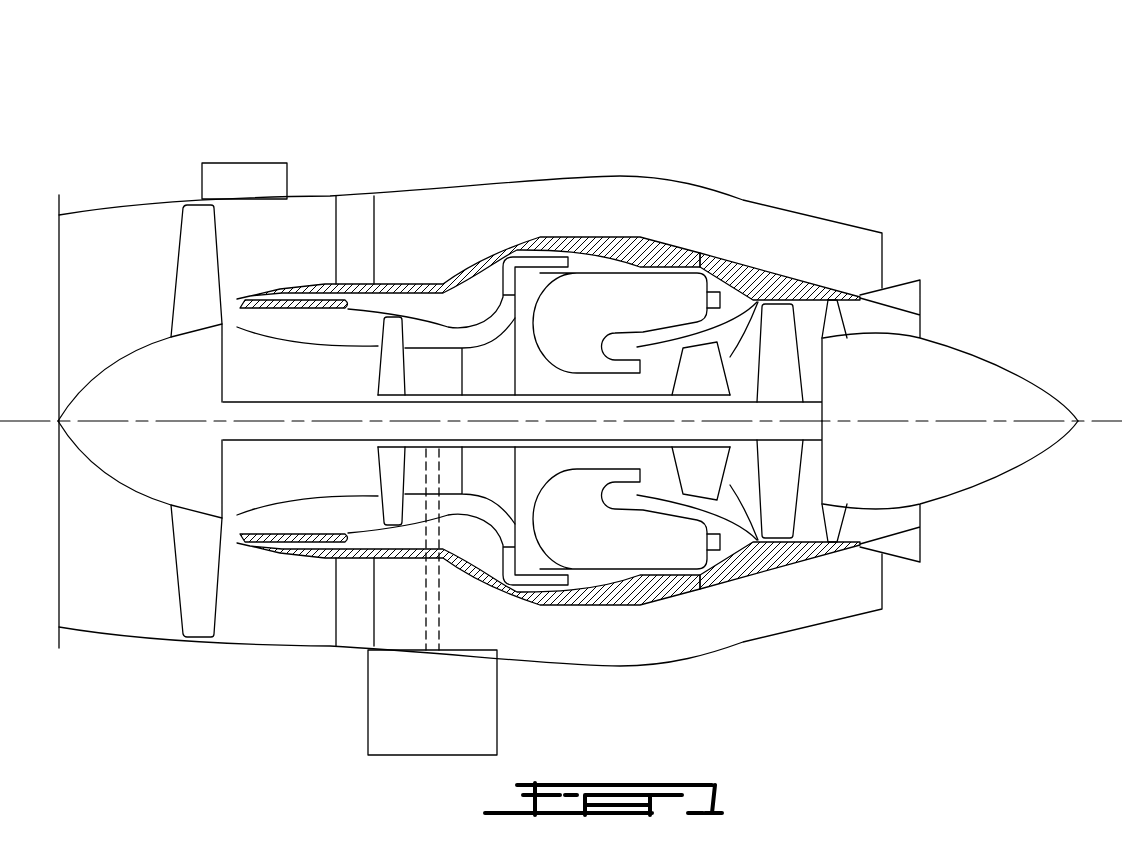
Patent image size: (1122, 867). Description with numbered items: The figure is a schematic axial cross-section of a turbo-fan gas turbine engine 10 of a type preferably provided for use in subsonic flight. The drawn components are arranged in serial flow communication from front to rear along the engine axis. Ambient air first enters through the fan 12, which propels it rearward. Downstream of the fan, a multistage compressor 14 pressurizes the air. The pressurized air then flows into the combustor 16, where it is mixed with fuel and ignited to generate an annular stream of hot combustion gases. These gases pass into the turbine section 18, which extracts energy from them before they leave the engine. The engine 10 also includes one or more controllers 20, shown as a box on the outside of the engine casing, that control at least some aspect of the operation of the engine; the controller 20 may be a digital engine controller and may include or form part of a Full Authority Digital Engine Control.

The gas turbine engine 10 is at (770, 123).
The fan 12 is at (193, 560).
The multistage compressor 14 is at (446, 342).
The combustor 16 is at (622, 293).
The turbine section 18 is at (740, 482).
The controller 20 is at (243, 163).